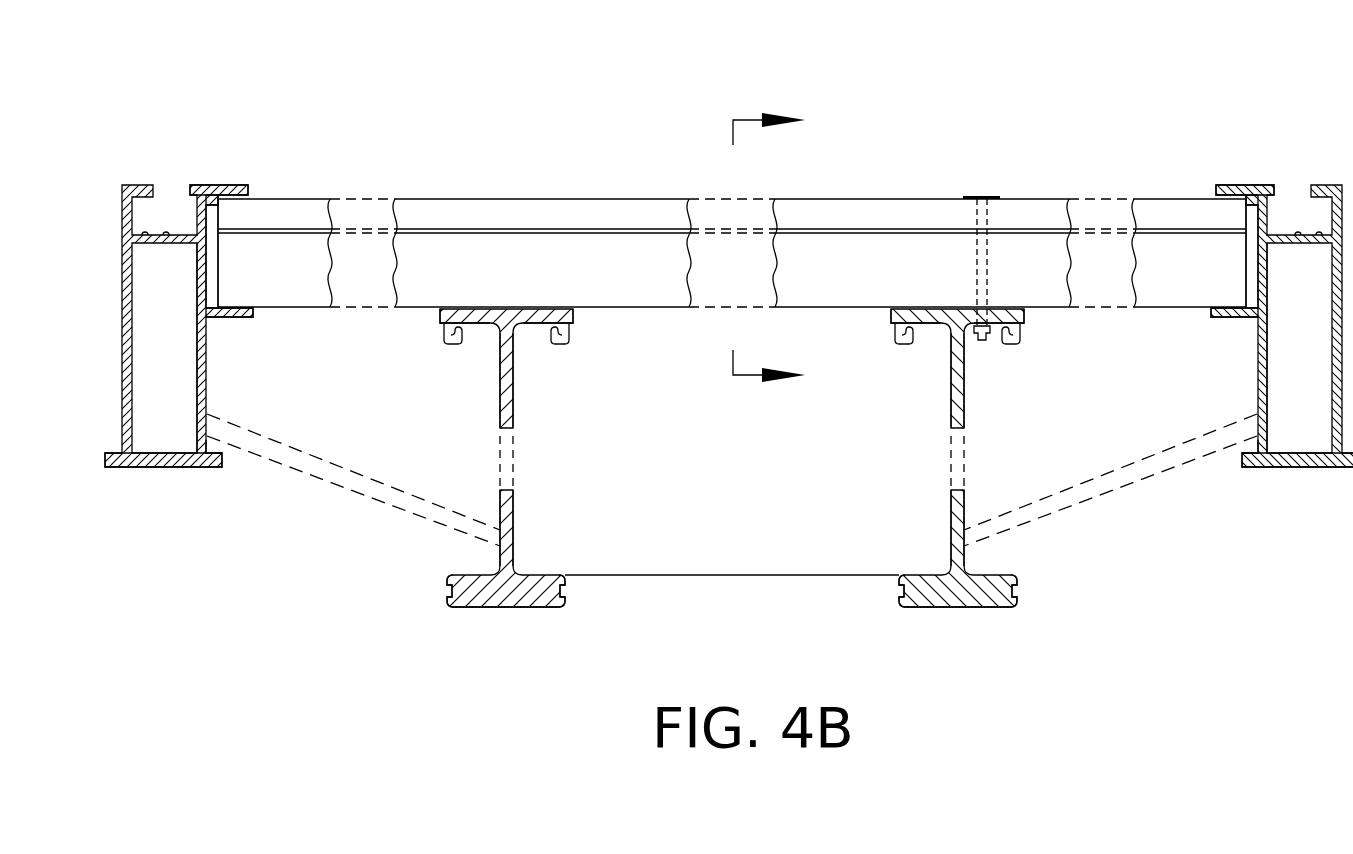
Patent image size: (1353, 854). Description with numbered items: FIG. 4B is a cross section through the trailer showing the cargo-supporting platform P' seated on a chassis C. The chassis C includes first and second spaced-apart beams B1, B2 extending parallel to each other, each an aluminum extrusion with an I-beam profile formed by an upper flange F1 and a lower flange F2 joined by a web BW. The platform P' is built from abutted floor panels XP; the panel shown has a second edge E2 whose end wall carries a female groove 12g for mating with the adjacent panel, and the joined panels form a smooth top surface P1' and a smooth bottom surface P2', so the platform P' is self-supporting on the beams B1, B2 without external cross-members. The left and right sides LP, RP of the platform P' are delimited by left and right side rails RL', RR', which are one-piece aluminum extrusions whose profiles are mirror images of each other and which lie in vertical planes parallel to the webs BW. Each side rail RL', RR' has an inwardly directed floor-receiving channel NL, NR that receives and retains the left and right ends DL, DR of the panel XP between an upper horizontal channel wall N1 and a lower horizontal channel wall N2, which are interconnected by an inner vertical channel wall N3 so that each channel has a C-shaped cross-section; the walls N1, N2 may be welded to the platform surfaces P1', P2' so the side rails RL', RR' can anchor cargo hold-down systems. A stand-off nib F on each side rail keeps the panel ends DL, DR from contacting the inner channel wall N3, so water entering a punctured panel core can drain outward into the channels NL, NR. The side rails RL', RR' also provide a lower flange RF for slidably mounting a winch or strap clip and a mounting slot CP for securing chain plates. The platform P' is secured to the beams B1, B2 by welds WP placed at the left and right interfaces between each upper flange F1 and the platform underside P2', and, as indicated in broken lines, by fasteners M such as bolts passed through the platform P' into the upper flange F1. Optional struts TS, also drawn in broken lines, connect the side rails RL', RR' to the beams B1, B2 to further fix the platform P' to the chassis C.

The mounting slots CP is at (163, 184).
The upper horizontal channel wall N1 is at (208, 192).
The left floor receiving channel NL is at (224, 212).
The right floor receiving channel NR is at (1240, 212).
The stand-off nib F is at (200, 270).
The inner vertical channel wall N3 is at (203, 305).
The lower horizontal channel wall N2 is at (226, 314).
The left lateral end DL is at (222, 267).
The right lateral end DR is at (1242, 267).
The left side rail RL' is at (163, 494).
The right side rail RR' is at (1297, 494).
The lower flange RF is at (216, 472).
The cargo-supporting platform P' is at (732, 255).
The left side of platform LP is at (321, 192).
The upper cargo-supporting surface P1' is at (542, 196).
The female groove 12g is at (551, 236).
The lower surface of platform P2' is at (554, 366).
The second edge E2 is at (452, 254).
The panel XP is at (821, 254).
The right side of platform RP is at (1140, 192).
The fasteners M is at (975, 223).
The first beam B1 is at (489, 611).
The second beam B2 is at (975, 611).
The upper flange F1 is at (531, 328).
The web BW is at (513, 522).
The lower flange F2 is at (548, 609).
The welds WP is at (442, 314).
The tie strut TS is at (343, 492).
The chassis C is at (360, 594).